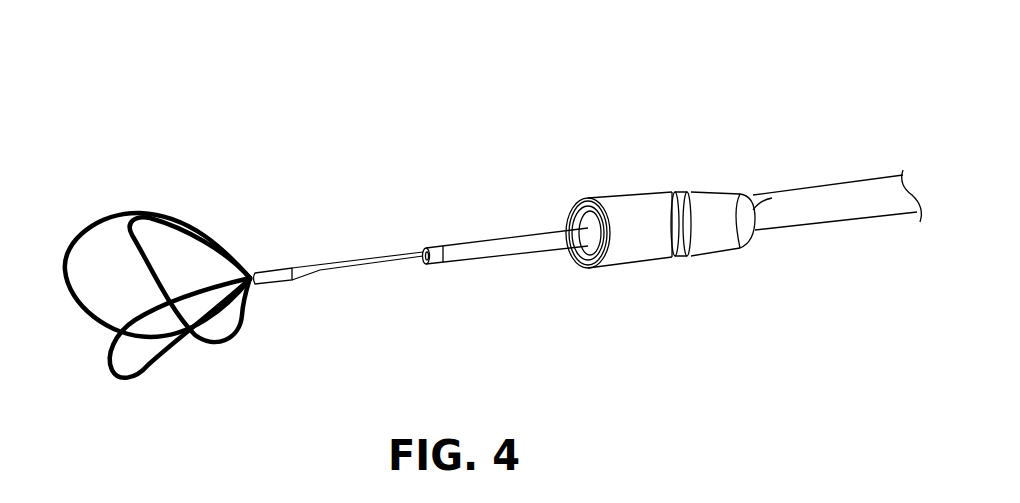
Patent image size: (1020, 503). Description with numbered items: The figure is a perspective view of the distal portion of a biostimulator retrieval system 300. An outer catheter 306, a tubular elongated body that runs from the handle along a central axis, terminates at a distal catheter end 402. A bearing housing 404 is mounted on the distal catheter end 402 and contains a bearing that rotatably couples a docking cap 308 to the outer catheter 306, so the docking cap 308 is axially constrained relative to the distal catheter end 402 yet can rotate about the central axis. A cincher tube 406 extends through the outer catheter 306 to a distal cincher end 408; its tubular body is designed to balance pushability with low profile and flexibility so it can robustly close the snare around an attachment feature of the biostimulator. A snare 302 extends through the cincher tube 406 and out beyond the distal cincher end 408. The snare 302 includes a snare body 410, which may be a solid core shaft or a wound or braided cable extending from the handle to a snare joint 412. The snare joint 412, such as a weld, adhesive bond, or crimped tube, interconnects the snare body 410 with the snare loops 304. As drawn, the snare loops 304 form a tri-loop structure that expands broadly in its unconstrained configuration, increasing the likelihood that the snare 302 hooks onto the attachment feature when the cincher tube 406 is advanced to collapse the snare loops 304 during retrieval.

The biostimulator retrieval system 300 is at (743, 38).
The snare 302 is at (93, 221).
The snare loops 304 is at (177, 287).
The outer catheter 306 is at (868, 180).
The docking cap 308 is at (615, 195).
The distal catheter end 402 is at (770, 204).
The bearing housing 404 is at (738, 200).
The cincher tube 406 is at (527, 249).
The distal cincher end 408 is at (423, 250).
The snare body 410 is at (373, 262).
The snare joint 412 is at (282, 285).